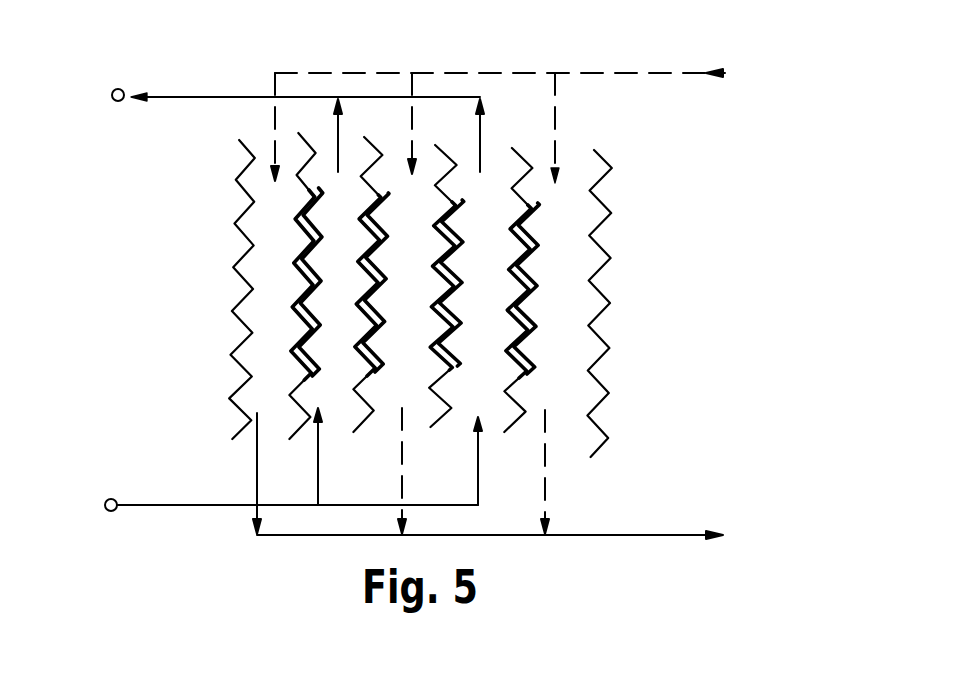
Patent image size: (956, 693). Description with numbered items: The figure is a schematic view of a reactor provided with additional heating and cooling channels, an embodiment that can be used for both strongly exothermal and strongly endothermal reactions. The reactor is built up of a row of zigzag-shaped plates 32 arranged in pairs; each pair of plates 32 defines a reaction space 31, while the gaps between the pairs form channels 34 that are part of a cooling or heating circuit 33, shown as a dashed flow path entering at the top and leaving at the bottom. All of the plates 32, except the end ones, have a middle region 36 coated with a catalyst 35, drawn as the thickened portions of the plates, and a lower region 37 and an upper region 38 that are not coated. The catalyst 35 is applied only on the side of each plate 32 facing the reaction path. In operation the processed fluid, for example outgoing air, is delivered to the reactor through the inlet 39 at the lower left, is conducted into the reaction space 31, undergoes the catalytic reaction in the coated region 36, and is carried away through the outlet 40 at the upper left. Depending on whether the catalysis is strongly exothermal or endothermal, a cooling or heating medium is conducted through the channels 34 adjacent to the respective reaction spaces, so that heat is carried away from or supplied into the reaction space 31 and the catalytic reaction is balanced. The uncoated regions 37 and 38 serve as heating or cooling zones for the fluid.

The reaction space 31 is at (492, 327).
The plate 32 is at (598, 380).
The cooling or heating circuit 33 is at (618, 73).
The channel 34 is at (557, 263).
The catalyst 35 is at (290, 252).
The region coated with a catalyst 36 is at (283, 287).
The lower region 37 is at (262, 397).
The upper region 38 is at (290, 195).
The inlet 39 is at (106, 500).
The outlet 40 is at (113, 90).